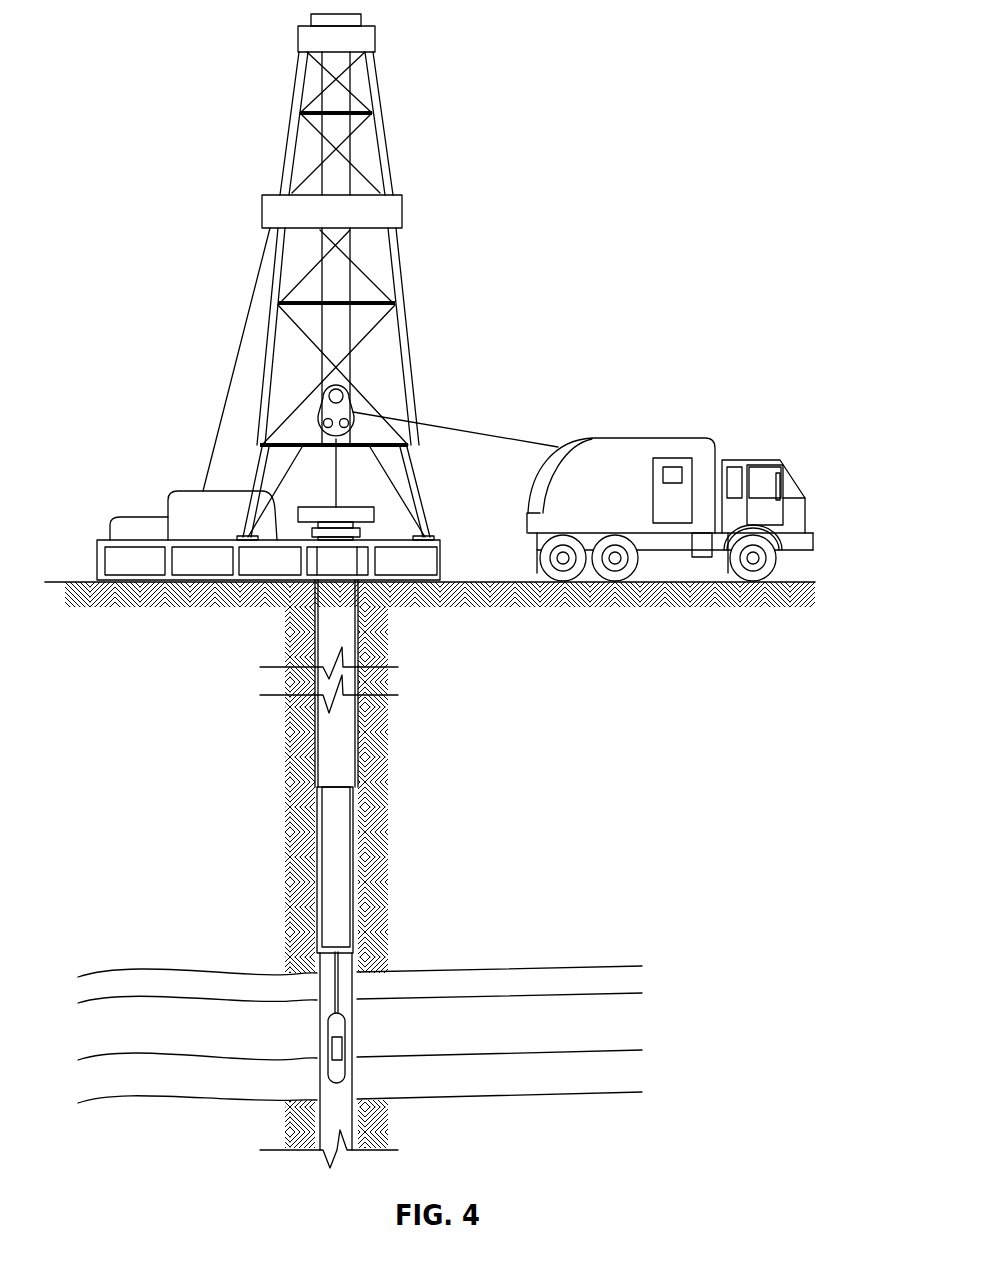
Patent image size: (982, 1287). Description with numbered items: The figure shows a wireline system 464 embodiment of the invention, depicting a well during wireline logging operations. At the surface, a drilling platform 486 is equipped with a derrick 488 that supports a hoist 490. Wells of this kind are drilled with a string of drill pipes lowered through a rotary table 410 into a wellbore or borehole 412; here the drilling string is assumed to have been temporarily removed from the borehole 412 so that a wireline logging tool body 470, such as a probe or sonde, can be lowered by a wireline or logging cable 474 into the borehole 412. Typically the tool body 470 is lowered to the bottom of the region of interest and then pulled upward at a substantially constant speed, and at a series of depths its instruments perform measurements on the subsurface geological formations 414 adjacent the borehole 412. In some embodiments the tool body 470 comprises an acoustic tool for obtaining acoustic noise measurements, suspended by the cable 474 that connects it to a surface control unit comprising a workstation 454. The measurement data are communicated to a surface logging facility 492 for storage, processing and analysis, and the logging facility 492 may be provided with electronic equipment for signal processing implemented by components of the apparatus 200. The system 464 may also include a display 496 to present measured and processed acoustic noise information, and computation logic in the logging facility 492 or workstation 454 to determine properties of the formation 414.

The wireline system 464 is at (516, 214).
The hoist 490 is at (352, 408).
The wireline or logging cable 474 is at (467, 431).
The surface logging facility 492 is at (632, 437).
The display 496 is at (672, 467).
The workstation 454 is at (652, 509).
The rotary table 410 is at (374, 514).
The derrick 488 is at (425, 522).
The drilling platform 486 is at (445, 560).
The wellbore or borehole 412 is at (320, 982).
The wireline logging tool body 470 is at (345, 1035).
The apparatus 200 is at (343, 1055).
The subsurface geological formations 414 is at (650, 960).